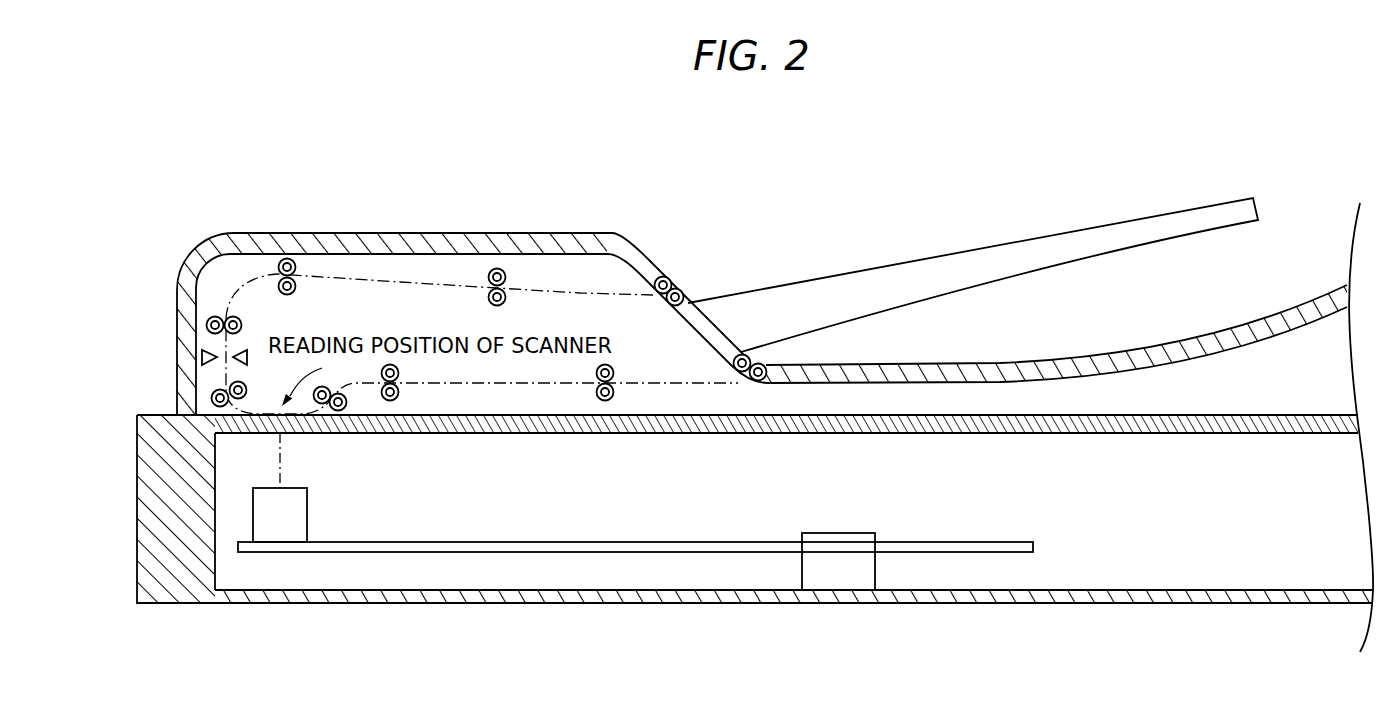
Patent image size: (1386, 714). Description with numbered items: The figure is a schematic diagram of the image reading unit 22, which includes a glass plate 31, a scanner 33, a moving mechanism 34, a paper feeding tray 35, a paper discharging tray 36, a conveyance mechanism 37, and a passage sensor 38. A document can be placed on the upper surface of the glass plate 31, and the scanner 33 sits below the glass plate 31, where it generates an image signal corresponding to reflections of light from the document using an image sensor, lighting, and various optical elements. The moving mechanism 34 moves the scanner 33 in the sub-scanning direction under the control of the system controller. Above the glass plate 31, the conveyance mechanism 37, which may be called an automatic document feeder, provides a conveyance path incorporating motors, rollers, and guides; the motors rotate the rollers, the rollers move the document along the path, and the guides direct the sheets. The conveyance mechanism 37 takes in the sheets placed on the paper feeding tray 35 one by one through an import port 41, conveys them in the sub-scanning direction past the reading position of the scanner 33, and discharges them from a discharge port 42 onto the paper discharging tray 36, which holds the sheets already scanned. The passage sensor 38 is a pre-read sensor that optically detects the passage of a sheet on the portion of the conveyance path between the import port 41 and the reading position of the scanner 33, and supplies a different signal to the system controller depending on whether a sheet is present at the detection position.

The image reading unit 22 is at (734, 177).
The glass plate 31 is at (600, 434).
The scanner 33 is at (307, 513).
The moving mechanism 34 is at (838, 533).
The paper feeding tray 35 is at (895, 263).
The paper discharging tray 36 is at (975, 364).
The conveyance mechanism 37 is at (586, 265).
The passage sensor 38 is at (184, 355).
The import port 41 is at (669, 278).
The discharge port 42 is at (763, 360).